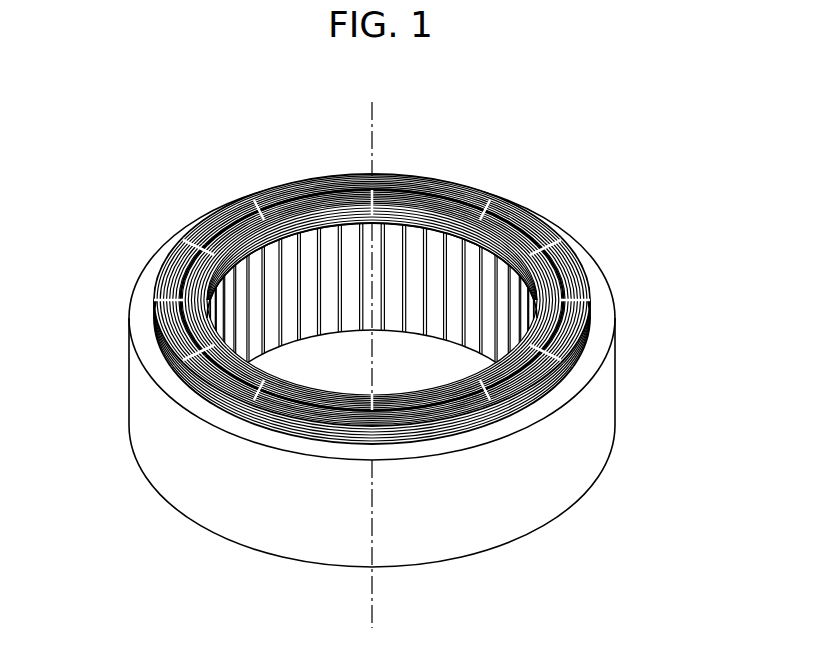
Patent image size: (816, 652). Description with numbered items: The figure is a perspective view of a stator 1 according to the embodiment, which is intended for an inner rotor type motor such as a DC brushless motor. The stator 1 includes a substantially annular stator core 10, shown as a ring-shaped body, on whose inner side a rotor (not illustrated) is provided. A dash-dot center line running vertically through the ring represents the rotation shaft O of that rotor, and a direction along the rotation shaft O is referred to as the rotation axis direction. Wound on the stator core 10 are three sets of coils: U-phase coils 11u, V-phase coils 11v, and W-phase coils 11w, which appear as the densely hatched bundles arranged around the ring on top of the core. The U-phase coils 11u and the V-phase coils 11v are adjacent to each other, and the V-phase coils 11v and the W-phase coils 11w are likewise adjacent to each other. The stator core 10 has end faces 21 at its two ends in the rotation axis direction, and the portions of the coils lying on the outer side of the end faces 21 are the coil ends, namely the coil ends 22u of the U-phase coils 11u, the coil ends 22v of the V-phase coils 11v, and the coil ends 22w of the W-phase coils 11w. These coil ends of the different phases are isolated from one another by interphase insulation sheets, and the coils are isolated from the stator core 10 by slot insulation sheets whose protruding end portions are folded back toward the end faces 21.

The stator 1 is at (550, 113).
The stator core 10 is at (603, 300).
The end face of the stator core 21 is at (136, 313).
The W-phase coil 11w is at (459, 309).
The coil end of the W-phase coil 22w is at (550, 325).
The V-phase coil 11v is at (454, 309).
The coil end of the V-phase coil 22v is at (528, 368).
The U-phase coil 11u is at (455, 324).
The coil end of the U-phase coil 22u is at (520, 395).
The rotation shaft O is at (372, 117).